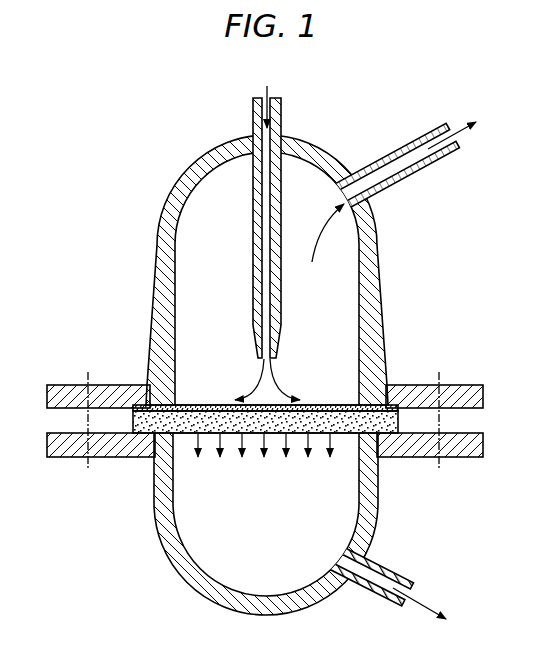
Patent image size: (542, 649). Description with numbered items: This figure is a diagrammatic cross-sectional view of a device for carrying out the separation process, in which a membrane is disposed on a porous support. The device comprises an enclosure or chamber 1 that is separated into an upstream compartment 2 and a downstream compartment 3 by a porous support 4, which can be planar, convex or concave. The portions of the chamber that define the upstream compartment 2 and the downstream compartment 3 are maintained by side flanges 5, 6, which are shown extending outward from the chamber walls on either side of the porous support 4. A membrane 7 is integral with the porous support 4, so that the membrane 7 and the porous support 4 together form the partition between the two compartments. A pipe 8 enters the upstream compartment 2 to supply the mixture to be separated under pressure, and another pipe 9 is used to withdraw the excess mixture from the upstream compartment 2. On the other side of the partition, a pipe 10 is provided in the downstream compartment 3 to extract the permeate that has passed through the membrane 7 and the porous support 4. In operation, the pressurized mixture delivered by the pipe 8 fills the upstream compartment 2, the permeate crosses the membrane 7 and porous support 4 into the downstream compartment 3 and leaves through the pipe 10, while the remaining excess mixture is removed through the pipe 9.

The enclosure or chamber 1 is at (153, 291).
The upstream compartment 2 is at (351, 271).
The downstream compartment 3 is at (345, 501).
The porous support 4 is at (190, 442).
The side flange 5 is at (52, 388).
The side flange 6 is at (54, 452).
The membrane 7 is at (312, 406).
The pipe 8 is at (277, 102).
The pipe 9 is at (435, 143).
The pipe 10 is at (392, 596).